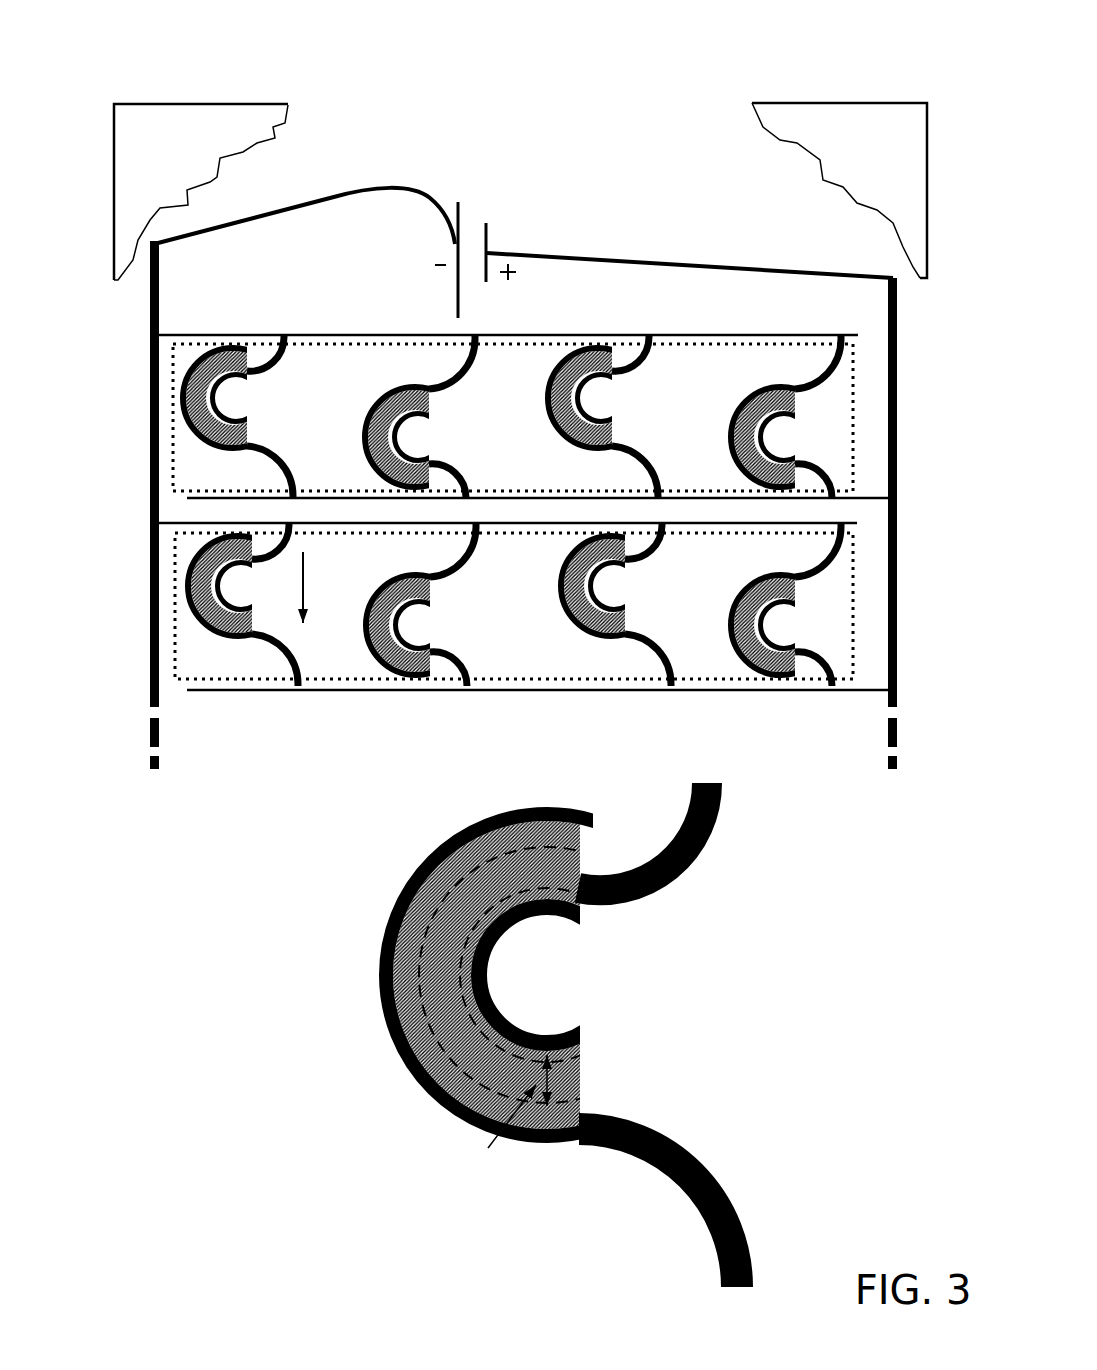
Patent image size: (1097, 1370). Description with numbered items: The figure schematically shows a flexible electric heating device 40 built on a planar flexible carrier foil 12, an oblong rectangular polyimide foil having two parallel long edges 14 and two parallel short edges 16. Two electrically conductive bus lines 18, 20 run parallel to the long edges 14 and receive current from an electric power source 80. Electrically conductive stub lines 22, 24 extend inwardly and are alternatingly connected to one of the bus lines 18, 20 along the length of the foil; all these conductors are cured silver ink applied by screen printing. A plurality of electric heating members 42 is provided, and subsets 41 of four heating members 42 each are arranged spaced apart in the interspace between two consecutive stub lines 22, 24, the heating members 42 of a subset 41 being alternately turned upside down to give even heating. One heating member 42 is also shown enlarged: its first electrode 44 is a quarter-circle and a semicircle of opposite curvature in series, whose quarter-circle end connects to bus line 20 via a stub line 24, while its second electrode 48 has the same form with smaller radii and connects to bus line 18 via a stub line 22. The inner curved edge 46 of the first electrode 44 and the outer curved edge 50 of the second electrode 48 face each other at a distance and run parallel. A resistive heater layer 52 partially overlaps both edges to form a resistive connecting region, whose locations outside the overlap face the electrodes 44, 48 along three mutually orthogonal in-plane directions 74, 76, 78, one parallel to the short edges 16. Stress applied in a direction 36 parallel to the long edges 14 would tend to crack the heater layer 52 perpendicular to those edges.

The planar flexible carrier foil 12 is at (822, 125).
The long edges 14 is at (179, 150).
The short edges 16 is at (248, 103).
The electrically conductive bus line 18 is at (150, 307).
The electrically conductive bus line 20 is at (897, 315).
The electrically conductive stub line 22 is at (340, 334).
The electrically conductive stub line 24 is at (710, 499).
The direction of stress 36 is at (303, 582).
The flexible electric heating device 40 is at (124, 61).
The subset of electric heating members 41 is at (853, 440).
The electric heating member 42 is at (731, 398).
The first electrically conductive electrode 44 is at (647, 1167).
The curved edge 46 is at (453, 880).
The second electrically conductive electrode 48 is at (710, 852).
The curved edge 50 is at (475, 933).
The resistive heater layer 52 is at (405, 992).
The orthogonal direction 74 is at (495, 1137).
The orthogonal direction 76 is at (545, 1070).
The orthogonal direction 78 is at (545, 1092).
The electric power source 80 is at (491, 187).